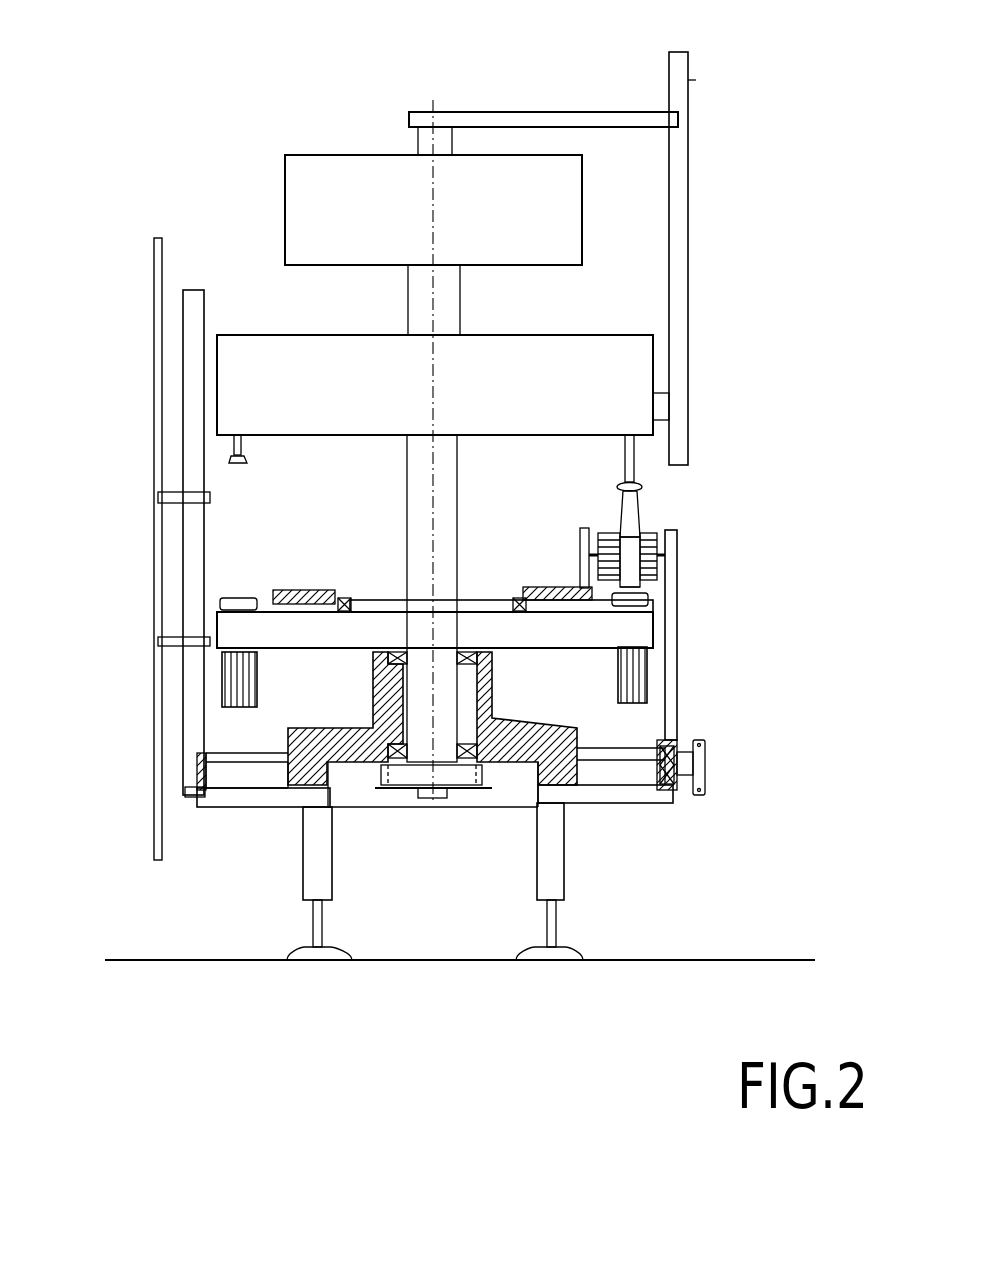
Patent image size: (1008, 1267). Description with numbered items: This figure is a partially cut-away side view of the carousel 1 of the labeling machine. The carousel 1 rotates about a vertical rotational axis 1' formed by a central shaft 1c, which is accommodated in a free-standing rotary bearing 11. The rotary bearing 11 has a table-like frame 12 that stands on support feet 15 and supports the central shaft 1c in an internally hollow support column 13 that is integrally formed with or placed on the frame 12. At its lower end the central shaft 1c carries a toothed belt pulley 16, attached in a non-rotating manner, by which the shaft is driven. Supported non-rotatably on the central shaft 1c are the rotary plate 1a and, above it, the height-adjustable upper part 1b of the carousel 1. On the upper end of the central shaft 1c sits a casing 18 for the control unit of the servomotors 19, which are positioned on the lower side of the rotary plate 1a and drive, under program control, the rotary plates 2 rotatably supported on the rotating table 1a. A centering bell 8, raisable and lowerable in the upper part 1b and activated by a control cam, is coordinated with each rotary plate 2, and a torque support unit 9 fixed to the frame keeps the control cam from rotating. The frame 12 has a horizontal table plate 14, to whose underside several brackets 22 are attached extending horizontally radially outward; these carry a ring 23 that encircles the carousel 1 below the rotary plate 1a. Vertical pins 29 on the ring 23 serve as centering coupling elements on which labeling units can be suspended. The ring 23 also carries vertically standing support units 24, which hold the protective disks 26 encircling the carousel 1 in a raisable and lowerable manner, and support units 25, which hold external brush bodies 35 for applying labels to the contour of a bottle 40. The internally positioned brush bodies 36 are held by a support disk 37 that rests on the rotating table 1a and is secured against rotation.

The rotational axis 1' is at (543, 79).
The carousel 1 is at (342, 221).
The casing 18 is at (558, 208).
The torque support unit 9 is at (672, 408).
The protective disks 26 is at (156, 259).
The support units 24 is at (190, 320).
The upper part of the carousel 1b is at (253, 391).
The centering bell 8 is at (230, 453).
The bottle 40 is at (632, 505).
The internally-positioned brush bodies 36 is at (640, 530).
The external brush bodies 35 is at (650, 572).
The support disk 37 is at (285, 590).
The rotary plates 2 is at (220, 602).
The rotary plate 1a is at (260, 630).
The support units 25 is at (680, 630).
The servomotors 19 is at (245, 680).
The table plate of the frame 14 is at (552, 716).
The rotary bearing 11 is at (360, 672).
The support column 13 is at (385, 702).
The ring 23 is at (199, 778).
The brackets 22 is at (243, 798).
The pins 29 is at (705, 748).
The frame 12 is at (505, 785).
The toothed belt pulley 16 is at (393, 778).
The central shaft 1c is at (443, 740).
The support feet 15 is at (317, 870).